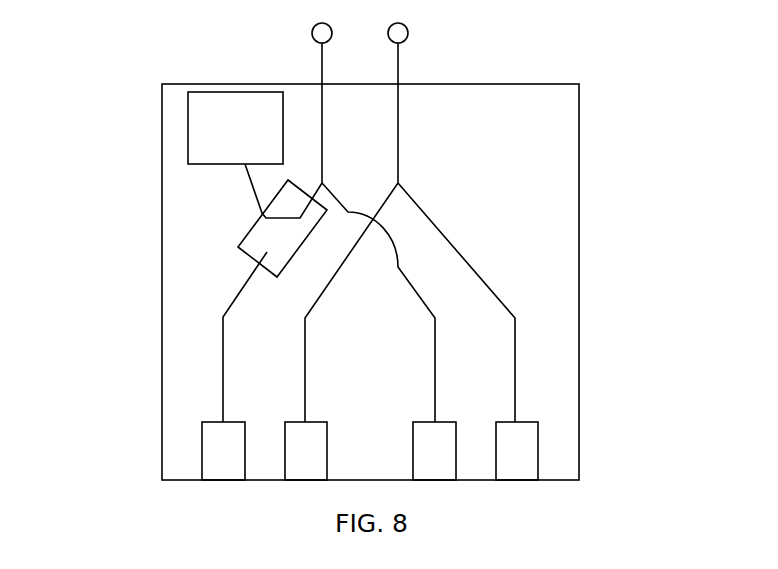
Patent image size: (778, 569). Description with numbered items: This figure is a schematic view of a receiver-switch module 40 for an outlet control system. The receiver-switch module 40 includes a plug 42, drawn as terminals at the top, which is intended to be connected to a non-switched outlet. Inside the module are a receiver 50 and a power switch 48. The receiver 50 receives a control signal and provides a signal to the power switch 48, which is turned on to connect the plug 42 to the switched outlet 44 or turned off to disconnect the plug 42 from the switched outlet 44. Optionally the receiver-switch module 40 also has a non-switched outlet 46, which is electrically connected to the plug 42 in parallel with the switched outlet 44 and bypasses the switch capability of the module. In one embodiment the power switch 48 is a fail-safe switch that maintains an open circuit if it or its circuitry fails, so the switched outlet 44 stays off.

The receiver-switch module 40 is at (162, 162).
The plug 42 is at (312, 33).
The switched outlet 44 is at (212, 460).
The non-switched outlet 46 is at (424, 460).
The power switch 48 is at (238, 245).
The receiver 50 is at (188, 98).